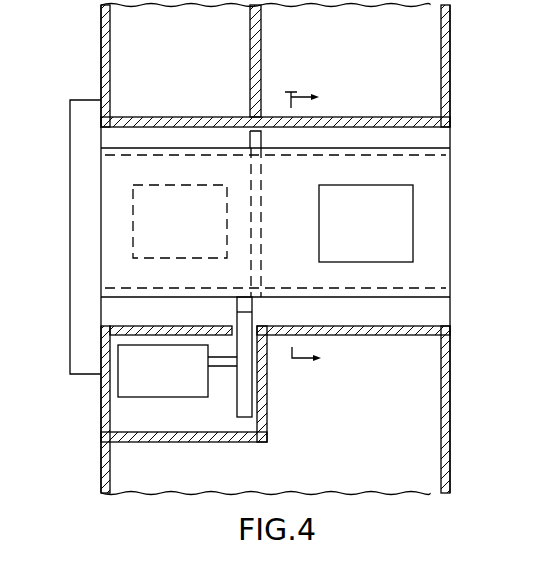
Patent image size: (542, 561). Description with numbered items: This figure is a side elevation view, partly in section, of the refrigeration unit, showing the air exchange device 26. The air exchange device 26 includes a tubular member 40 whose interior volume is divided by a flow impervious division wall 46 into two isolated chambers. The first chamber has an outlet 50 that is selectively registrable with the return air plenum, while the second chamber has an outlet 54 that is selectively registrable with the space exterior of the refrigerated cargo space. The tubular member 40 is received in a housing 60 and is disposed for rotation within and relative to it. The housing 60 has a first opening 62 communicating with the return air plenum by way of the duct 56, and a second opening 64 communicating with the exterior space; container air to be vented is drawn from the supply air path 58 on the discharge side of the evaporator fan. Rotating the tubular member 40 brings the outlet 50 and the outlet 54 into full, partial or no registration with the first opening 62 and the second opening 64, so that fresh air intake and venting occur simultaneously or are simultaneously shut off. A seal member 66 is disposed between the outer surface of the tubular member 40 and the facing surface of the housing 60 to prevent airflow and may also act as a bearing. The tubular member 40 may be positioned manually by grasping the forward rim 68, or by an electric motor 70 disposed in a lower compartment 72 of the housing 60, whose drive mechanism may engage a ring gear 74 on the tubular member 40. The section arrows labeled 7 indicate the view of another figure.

The air exchange device 26 is at (76, 70).
The tubular member 40 is at (385, 148).
The division wall 46 is at (262, 208).
The outlet 50 is at (160, 258).
The outlet 54 is at (347, 262).
The duct 56 is at (250, 58).
The supply air path 58 is at (376, 415).
The housing 60 is at (102, 99).
The first opening 62 is at (160, 124).
The second opening 64 is at (372, 335).
The seal member 66 is at (118, 270).
The forward rim 68 is at (88, 374).
The electric motor 70 is at (153, 397).
The lower compartment 72 is at (268, 392).
The ring gear 74 is at (252, 305).
The section line 7 is at (310, 228).